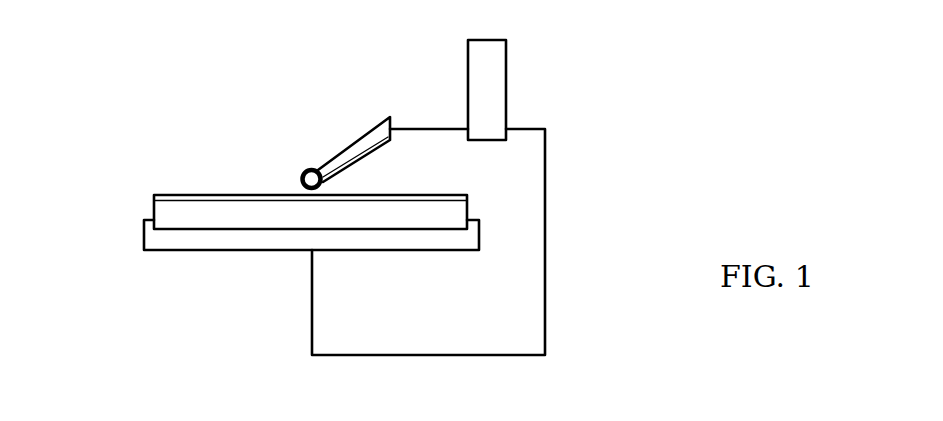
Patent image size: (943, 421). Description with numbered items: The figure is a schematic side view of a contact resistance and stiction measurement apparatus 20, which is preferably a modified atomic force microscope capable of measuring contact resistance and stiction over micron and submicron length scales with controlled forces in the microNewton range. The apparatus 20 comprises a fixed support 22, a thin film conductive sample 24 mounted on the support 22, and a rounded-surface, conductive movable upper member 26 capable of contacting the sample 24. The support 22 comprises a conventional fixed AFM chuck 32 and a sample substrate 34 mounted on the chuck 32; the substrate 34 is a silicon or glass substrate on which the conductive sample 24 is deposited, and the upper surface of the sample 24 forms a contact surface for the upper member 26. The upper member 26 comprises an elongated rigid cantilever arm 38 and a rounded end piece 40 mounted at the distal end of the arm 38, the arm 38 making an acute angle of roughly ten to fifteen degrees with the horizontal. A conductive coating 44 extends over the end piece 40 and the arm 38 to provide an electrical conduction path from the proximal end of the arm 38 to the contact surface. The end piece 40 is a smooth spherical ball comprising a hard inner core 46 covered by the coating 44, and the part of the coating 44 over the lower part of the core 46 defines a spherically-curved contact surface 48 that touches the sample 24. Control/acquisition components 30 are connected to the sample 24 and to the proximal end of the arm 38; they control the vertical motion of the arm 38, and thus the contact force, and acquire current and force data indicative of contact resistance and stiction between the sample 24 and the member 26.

The contact resistance and stiction measurement apparatus 20 is at (640, 63).
The fixed support 22 is at (133, 215).
The thin film conductive sample 24 is at (154, 197).
The movable upper member 26 is at (313, 80).
The control/acquisition components 30 is at (507, 88).
The AFM chuck 32 is at (370, 250).
The sample substrate 34 is at (469, 205).
The cantilever arm 38 is at (402, 113).
The rounded end piece 40 is at (288, 180).
The conductive coating 44 is at (370, 156).
The inner core 46 is at (312, 167).
The contact surface 48 is at (304, 190).